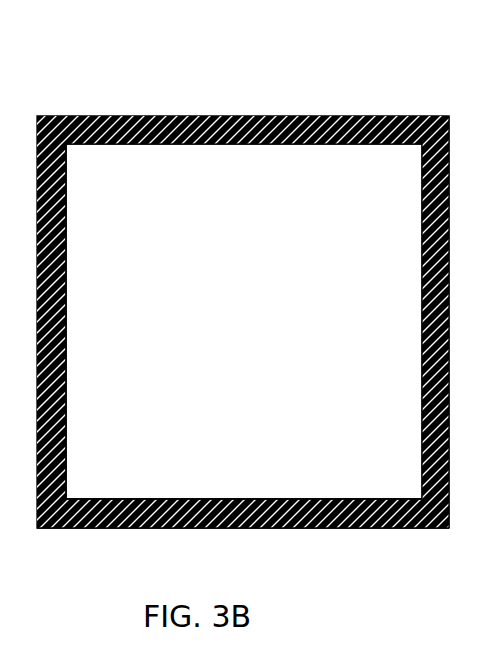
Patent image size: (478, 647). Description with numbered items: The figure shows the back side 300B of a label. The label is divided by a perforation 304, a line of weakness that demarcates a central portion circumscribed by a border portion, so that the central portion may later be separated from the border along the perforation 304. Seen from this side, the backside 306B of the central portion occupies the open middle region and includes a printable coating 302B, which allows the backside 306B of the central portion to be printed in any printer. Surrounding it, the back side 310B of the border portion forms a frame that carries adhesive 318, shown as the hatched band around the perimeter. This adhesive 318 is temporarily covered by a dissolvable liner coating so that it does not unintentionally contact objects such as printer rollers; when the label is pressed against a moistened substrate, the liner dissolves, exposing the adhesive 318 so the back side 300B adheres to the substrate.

The back side 300B is at (258, 105).
The printable coating 302B is at (132, 184).
The perforation 304 is at (294, 499).
The backside of the central portion 306B is at (119, 427).
The back side of the border portion 310B is at (344, 539).
The adhesive 318 is at (420, 540).